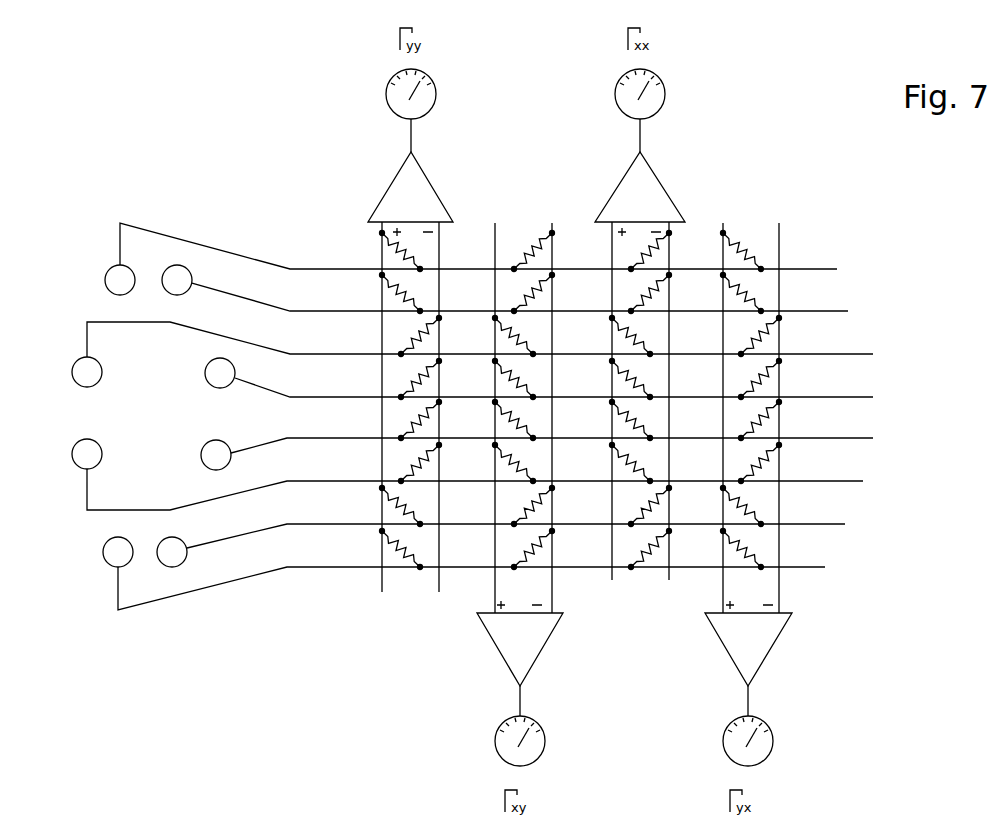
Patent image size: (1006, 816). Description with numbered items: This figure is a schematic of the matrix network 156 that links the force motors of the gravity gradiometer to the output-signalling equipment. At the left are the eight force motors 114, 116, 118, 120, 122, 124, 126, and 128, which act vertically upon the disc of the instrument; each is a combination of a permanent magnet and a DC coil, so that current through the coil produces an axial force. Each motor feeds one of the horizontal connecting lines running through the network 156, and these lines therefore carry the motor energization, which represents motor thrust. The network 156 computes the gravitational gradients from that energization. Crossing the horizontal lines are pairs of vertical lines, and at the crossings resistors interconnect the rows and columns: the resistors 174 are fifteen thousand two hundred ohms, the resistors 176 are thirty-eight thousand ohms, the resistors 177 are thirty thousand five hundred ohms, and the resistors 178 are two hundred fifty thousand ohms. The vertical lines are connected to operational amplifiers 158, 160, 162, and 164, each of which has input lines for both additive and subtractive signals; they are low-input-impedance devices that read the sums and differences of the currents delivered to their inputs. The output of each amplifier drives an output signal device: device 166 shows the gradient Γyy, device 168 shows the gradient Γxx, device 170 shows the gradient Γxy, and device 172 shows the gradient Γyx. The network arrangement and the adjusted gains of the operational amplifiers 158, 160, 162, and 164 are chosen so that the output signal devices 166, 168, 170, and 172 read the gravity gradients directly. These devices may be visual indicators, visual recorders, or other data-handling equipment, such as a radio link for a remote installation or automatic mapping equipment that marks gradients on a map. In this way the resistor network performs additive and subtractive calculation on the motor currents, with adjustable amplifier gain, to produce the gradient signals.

The force motor 114 is at (82, 372).
The force motor 116 is at (112, 276).
The force motor 118 is at (172, 280).
The force motor 120 is at (215, 373).
The force motor 122 is at (211, 455).
The force motor 124 is at (175, 549).
The force motor 126 is at (113, 553).
The force motor 128 is at (83, 452).
The matrix network 156 is at (838, 241).
The operational amplifier 158 is at (405, 183).
The operational amplifier 160 is at (633, 183).
The operational amplifier 162 is at (508, 640).
The operational amplifier 164 is at (735, 646).
The output signal device 166 is at (386, 99).
The output signal device 168 is at (618, 99).
The output signal device 170 is at (500, 741).
The output signal device 172 is at (730, 742).
The resistor 174 is at (388, 239).
The resistor 176 is at (501, 324).
The resistor 177 is at (522, 259).
The resistor 178 is at (409, 344).